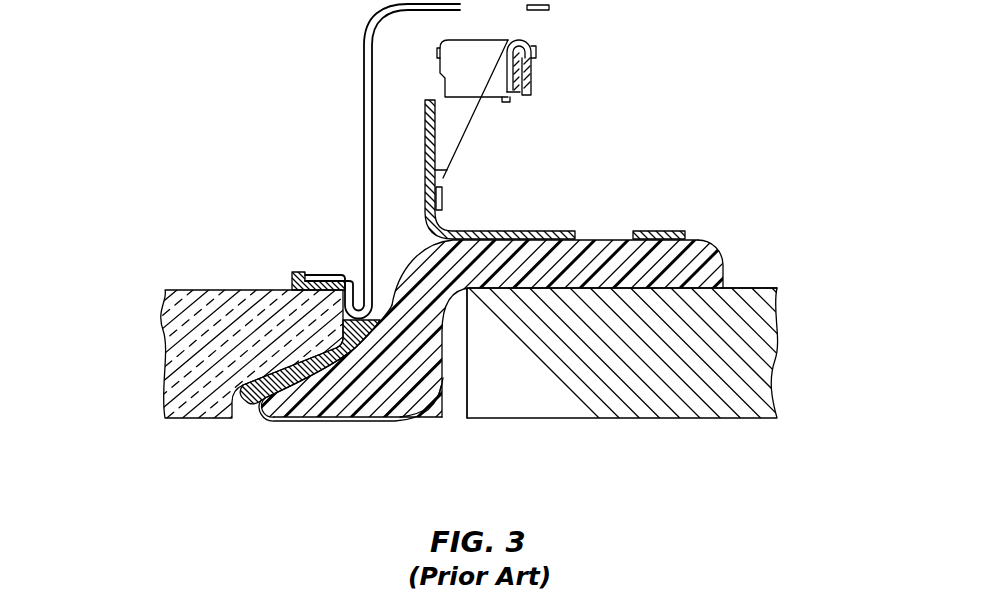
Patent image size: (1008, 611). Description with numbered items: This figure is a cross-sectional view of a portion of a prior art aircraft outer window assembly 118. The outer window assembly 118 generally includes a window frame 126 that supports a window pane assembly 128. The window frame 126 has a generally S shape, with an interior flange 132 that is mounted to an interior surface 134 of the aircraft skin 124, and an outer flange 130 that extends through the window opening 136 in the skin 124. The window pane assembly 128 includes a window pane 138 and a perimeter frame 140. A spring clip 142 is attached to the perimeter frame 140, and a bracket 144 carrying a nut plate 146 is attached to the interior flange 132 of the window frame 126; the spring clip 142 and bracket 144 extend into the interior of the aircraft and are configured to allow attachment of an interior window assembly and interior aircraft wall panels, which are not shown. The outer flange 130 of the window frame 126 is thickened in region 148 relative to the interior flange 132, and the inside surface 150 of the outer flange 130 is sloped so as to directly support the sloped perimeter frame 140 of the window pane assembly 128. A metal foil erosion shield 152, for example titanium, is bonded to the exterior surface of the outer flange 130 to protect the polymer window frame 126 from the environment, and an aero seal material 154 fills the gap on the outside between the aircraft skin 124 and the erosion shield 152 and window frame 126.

The outer window assembly 118 is at (790, 191).
The aircraft skin 124 is at (752, 366).
The window frame 126 is at (717, 238).
The window pane assembly 128 is at (163, 250).
The outer flange 130 is at (328, 419).
The interior flange 132 is at (706, 262).
The interior surface 134 is at (763, 286).
The window opening 136 is at (461, 397).
The window pane 138 is at (192, 362).
The perimeter frame 140 is at (345, 285).
The spring clip 142 is at (366, 75).
The bracket 144 is at (473, 233).
The nut plate 146 is at (531, 80).
The thickened region 148 is at (400, 422).
The inside surface 150 is at (308, 368).
The erosion shield 152 is at (266, 419).
The aero seal material 154 is at (441, 400).